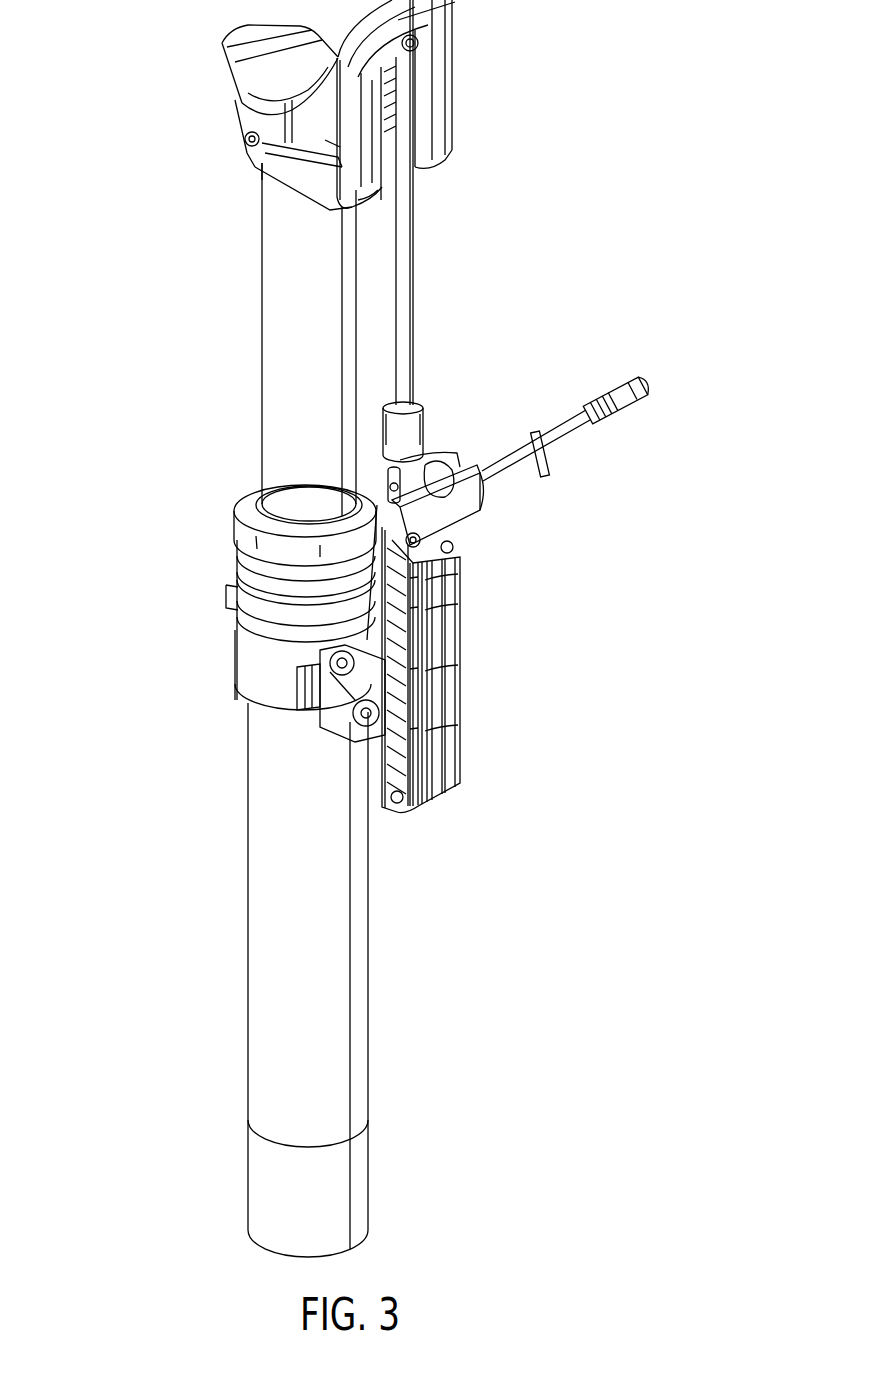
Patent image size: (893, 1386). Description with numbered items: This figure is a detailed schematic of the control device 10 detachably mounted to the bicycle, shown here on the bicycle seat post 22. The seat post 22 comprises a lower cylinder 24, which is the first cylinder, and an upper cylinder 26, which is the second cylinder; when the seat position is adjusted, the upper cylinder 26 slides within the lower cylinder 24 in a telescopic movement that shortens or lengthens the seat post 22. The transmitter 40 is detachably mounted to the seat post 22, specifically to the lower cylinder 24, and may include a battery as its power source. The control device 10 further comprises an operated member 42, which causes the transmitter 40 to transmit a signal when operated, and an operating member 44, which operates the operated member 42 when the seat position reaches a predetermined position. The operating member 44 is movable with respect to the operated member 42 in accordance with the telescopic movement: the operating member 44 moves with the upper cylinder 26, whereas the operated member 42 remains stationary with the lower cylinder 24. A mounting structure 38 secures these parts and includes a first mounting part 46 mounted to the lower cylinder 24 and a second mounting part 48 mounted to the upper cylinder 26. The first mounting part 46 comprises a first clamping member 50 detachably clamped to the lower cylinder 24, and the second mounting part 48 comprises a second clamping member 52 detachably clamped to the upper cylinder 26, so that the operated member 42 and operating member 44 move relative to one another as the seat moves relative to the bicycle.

The control device 10 is at (415, 628).
The bicycle seat post 22 is at (205, 710).
The lower cylinder 24 is at (250, 845).
The upper cylinder 26 is at (263, 312).
The mounting structure 38 is at (280, 350).
The transmitter 40 is at (474, 691).
The operated member 42 is at (468, 530).
The operating member 44 is at (414, 296).
The first mounting part 46 is at (203, 623).
The second mounting part 48 is at (247, 182).
The first clamping member 50 is at (282, 720).
The second clamping member 52 is at (362, 200).